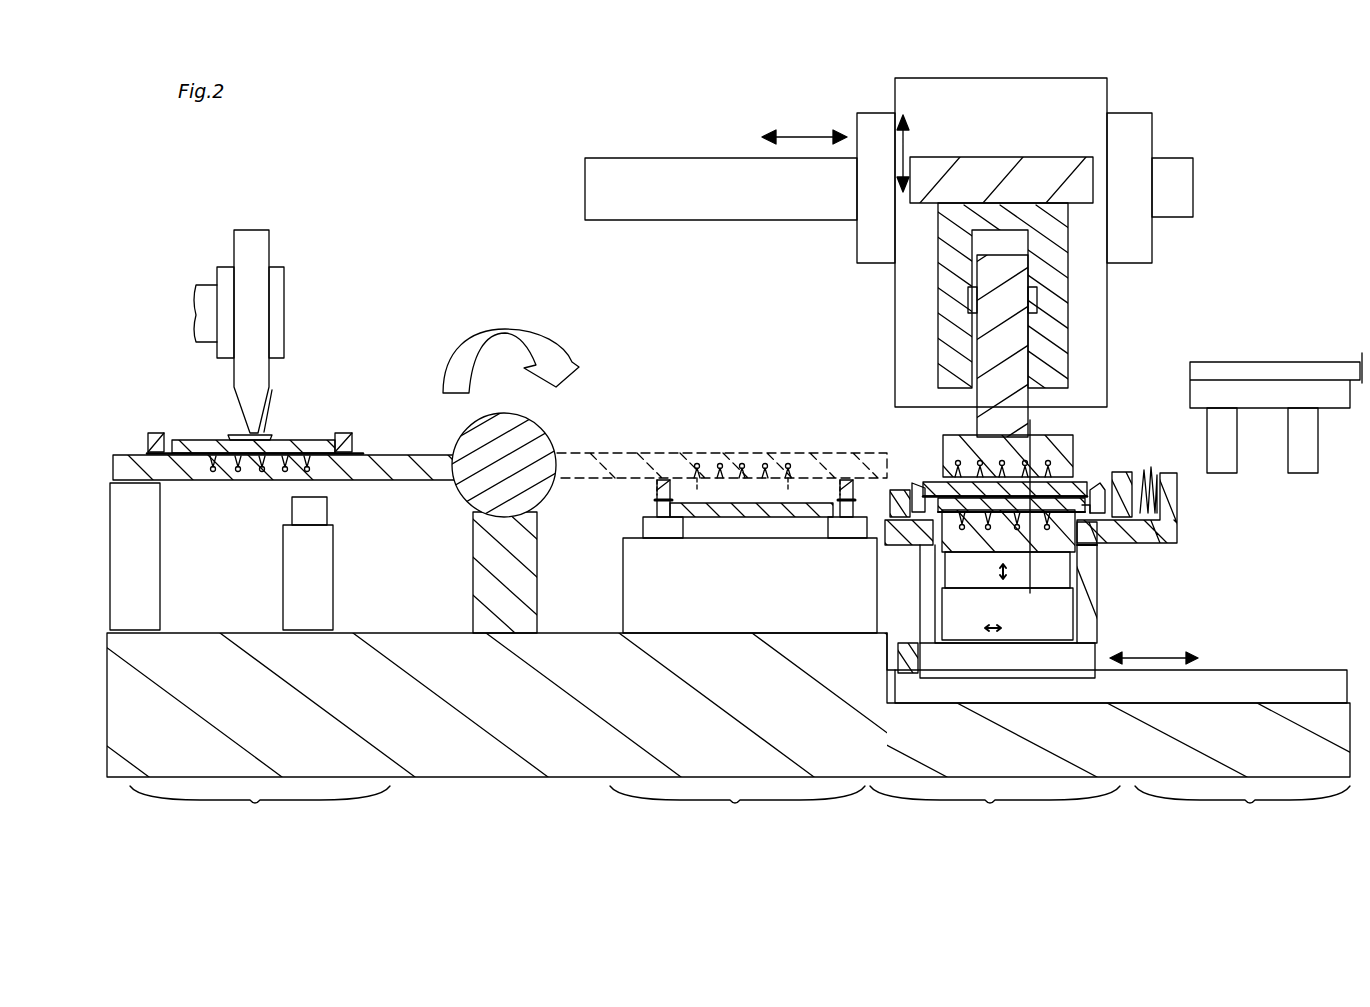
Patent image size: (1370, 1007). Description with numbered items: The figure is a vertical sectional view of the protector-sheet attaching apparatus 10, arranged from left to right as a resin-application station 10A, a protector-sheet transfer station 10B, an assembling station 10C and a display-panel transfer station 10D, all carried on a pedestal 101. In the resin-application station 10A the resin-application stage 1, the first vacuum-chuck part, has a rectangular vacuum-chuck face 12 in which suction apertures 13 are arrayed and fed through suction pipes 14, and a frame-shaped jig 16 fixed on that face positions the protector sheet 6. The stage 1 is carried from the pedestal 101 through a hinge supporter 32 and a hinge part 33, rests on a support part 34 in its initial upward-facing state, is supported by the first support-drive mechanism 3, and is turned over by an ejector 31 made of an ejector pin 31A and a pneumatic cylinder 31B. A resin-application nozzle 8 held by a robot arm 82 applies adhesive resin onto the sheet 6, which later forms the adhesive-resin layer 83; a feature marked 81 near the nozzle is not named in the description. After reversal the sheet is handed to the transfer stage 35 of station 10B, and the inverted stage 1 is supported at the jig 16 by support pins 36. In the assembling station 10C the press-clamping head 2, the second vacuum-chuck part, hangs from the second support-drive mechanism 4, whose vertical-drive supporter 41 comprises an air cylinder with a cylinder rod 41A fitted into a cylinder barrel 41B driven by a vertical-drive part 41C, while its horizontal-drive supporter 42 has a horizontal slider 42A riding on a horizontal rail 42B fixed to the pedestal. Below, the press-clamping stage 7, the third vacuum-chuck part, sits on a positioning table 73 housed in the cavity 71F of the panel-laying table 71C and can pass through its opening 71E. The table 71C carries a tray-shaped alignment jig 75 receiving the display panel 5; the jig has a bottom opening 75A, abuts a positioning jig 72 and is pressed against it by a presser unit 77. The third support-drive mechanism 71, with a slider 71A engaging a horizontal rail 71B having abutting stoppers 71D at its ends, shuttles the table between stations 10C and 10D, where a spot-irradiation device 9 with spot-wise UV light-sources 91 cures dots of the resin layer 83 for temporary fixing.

The resin-application stage 1 is at (335, 475).
The press-clamping head 2 is at (1073, 448).
The first support-drive mechanism 3 is at (623, 370).
The second support-drive mechanism 4 is at (957, 257).
The display panel 5 is at (940, 500).
The protector sheet 6 is at (312, 440).
The press-clamping stage 7 is at (965, 538).
The resin-application nozzle 8 is at (243, 388).
The spot-irradiation device 9 is at (1276, 398).
The protector-sheet attaching apparatus 10 is at (151, 123).
The resin-application station 10A is at (260, 811).
The protector-sheet transfer station 10B is at (737, 811).
The assembling station 10C is at (995, 811).
The display-panel transfer station 10D is at (1242, 811).
The vacuum-chuck face 12 is at (340, 484).
The suction apertures 13 is at (235, 452).
The suction pipes 14 is at (213, 470).
The frame-shaped jig 16 is at (153, 432).
The ejector 31 is at (353, 563).
The ejector pin 31A is at (328, 505).
The pneumatic cylinder 31B is at (328, 572).
The hinge supporter 32 is at (485, 545).
The hinge part 33 is at (515, 480).
The support part 34 is at (150, 565).
The transfer stage 35 is at (640, 578).
The support pins 36 is at (650, 518).
The vertical-drive supporter 41 is at (986, 257).
The cylinder rod 41A is at (1062, 310).
The cylinder barrel 41B is at (1030, 425).
The vertical-drive part 41C is at (1100, 265).
The horizontal-drive supporter 42 is at (922, 180).
The horizontal slider 42A is at (1145, 128).
The horizontal rail 42B is at (908, 174).
The third support-drive mechanism 71 is at (1112, 588).
The slider 71A is at (1085, 658).
The horizontal rail 71B is at (1243, 680).
The panel-laying table 71C is at (1120, 545).
The abutting stopper 71D is at (905, 645).
The opening 71E is at (1080, 560).
The cavity 71F is at (940, 580).
The positioning jig 72 is at (895, 510).
The positioning table 73 is at (1060, 625).
The alignment jig 75 is at (912, 490).
The opening 75A is at (1075, 545).
The presser unit 77 is at (1118, 472).
The dispensed material 81 is at (272, 405).
The robot arm 82 is at (205, 292).
The adhesive-resin layer 83 is at (1030, 518).
The spot-wise UV light-sources 91 is at (1225, 440).
The pedestal 101 is at (250, 648).